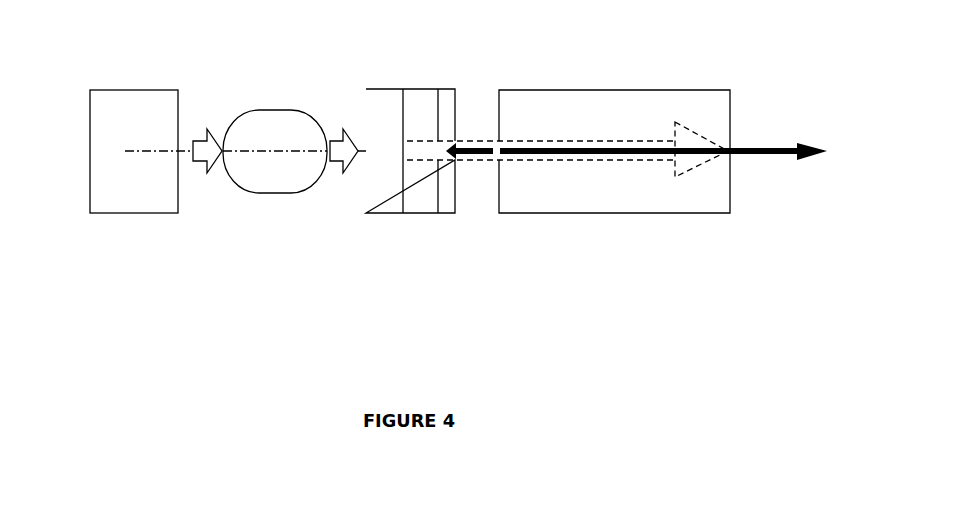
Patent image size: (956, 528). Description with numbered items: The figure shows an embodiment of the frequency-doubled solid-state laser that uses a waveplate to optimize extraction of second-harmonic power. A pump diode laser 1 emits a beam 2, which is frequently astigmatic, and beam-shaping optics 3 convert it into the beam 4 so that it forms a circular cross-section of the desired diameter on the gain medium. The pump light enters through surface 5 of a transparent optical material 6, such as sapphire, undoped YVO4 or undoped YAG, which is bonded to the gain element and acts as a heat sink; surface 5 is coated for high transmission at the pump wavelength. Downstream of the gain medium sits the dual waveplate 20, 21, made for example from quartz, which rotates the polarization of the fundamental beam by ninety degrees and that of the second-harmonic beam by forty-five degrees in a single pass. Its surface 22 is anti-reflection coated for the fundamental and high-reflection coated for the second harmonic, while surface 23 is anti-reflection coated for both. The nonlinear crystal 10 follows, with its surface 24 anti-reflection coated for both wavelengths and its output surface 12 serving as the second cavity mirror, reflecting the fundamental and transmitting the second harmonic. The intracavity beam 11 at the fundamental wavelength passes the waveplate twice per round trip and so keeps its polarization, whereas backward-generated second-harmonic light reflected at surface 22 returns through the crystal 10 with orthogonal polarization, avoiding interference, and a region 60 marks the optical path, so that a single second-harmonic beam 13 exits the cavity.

The pump diode laser 1 is at (135, 103).
The pump beam 2 is at (212, 157).
The beam-shaping optics 3 is at (287, 133).
The shaped pump beam 4 is at (345, 158).
The input surface of heat sink element 5 is at (366, 103).
The transparent optical heat sink material 6 is at (383, 198).
The waveplate 20 is at (402, 112).
The waveplate 21 is at (428, 102).
The waveplate surface 22 is at (443, 203).
The waveplate surface 23 is at (456, 98).
The nonlinear crystal surface 24 is at (500, 193).
The fiber end / channel 60 is at (462, 145).
The nonlinear crystal 10 is at (632, 198).
The intracavity laser beam 11 is at (708, 168).
The output surface of nonlinear crystal 12 is at (731, 110).
The output second-harmonic beam 13 is at (783, 138).